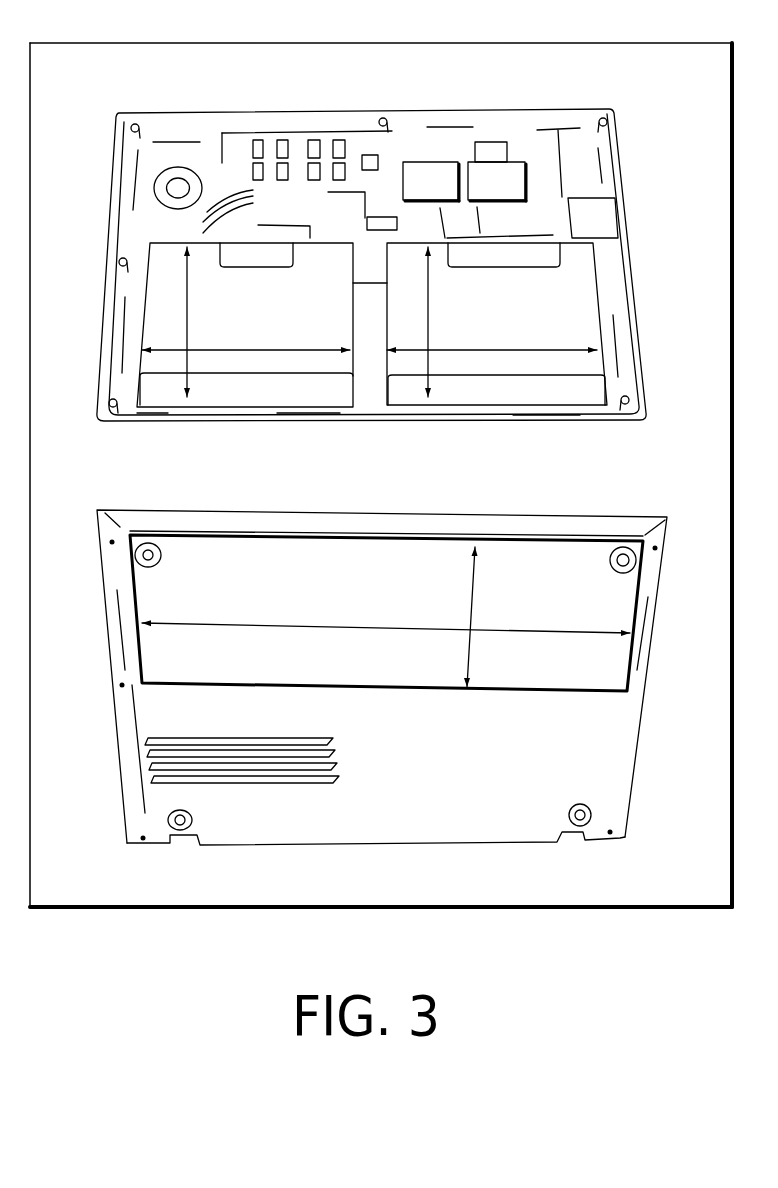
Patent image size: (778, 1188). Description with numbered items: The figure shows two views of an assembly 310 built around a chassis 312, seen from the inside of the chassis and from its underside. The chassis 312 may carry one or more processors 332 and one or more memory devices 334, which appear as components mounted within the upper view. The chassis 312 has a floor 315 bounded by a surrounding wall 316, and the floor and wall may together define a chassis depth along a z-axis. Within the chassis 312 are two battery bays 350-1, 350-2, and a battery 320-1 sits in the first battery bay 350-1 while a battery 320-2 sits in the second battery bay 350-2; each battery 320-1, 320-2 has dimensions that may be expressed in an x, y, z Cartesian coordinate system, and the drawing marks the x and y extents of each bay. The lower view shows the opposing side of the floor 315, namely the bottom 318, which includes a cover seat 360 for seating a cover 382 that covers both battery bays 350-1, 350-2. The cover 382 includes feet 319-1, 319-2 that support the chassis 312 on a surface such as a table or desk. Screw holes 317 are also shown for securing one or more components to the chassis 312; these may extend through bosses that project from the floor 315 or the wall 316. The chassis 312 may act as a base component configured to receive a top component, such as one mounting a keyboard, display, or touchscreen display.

The assembly 310 is at (433, 90).
The chassis 312 is at (638, 103).
The floor 315 is at (175, 236).
The surrounding wall 316 is at (472, 422).
The screw holes 317 is at (375, 836).
The bottom 318 is at (433, 733).
The foot 319-1 is at (158, 563).
The foot 319-2 is at (612, 564).
The battery 320-1 is at (281, 333).
The battery 320-2 is at (530, 328).
The processor 332 is at (446, 193).
The memory device 334 is at (512, 193).
The battery bay 350-1 is at (121, 286).
The battery bay 350-2 is at (622, 290).
The cover seat 360 is at (508, 692).
The cover 382 is at (328, 600).